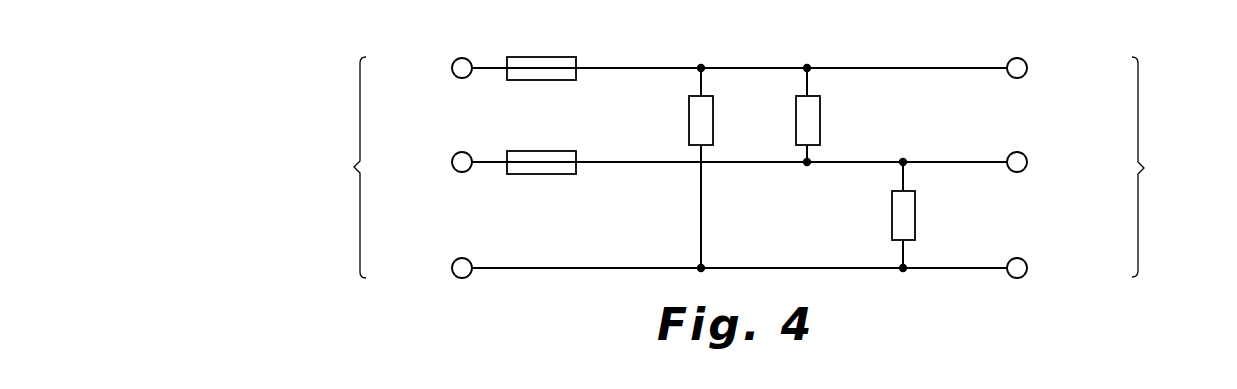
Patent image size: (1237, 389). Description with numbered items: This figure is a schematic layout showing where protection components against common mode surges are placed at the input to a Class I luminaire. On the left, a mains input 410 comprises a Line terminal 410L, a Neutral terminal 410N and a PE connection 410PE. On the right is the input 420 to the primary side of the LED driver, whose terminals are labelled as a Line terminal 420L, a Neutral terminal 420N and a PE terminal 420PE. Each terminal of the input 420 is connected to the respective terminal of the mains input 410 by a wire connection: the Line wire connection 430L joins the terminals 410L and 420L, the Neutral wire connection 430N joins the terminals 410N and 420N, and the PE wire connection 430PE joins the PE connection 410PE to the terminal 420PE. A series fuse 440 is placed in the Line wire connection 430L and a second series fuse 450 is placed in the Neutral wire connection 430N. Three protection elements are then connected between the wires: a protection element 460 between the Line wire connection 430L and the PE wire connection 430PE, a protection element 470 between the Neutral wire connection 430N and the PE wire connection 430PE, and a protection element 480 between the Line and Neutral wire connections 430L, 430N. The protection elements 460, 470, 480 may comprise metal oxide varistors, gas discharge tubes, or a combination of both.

The mains input 410 is at (337, 167).
The Line terminal 410L is at (429, 69).
The Neutral terminal 410N is at (429, 163).
The PE connection 410PE is at (421, 268).
The input 420 is at (1163, 167).
The Line terminal of the input 420L is at (1048, 69).
The Neutral terminal of the input 420N is at (1050, 163).
The PE terminal of the input 420PE is at (1056, 267).
The Line wire connection 430L is at (905, 68).
The Neutral wire connection 430N is at (747, 162).
The PE wire connection 430PE is at (575, 270).
The series fuse 440 is at (540, 55).
The series fuse 450 is at (543, 149).
The protection element 460 is at (703, 115).
The protection element 470 is at (905, 223).
The protection element 480 is at (808, 113).